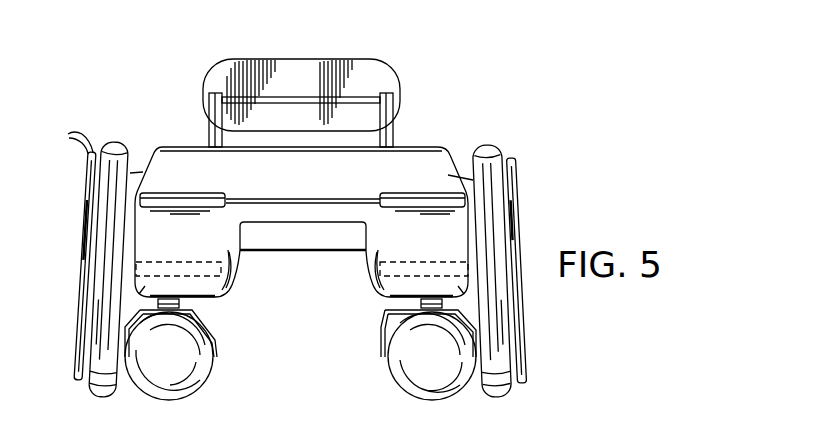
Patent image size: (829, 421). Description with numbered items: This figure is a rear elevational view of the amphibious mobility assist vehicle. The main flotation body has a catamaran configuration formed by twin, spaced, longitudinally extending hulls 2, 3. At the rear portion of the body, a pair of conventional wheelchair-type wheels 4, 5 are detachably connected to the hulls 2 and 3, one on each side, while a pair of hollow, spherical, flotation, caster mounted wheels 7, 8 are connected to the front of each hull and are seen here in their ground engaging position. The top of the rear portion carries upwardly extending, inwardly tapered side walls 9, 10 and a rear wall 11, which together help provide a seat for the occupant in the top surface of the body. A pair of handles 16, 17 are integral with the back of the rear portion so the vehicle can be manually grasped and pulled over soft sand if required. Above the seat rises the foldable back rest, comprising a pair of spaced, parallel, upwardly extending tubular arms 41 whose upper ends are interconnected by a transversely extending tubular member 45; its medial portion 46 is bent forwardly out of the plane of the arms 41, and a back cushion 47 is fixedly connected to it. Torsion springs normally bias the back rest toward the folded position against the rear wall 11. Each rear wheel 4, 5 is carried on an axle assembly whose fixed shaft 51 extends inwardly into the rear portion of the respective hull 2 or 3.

The hull 2 is at (227, 250).
The hull 3 is at (368, 252).
The wheelchair-type wheel 4 is at (71, 251).
The wheelchair-type wheel 5 is at (511, 158).
The spherical flotation caster mounted wheel 7 is at (196, 366).
The spherical flotation caster mounted wheel 8 is at (400, 368).
The side wall 9 is at (157, 157).
The side wall 10 is at (448, 152).
The rear wall 11 is at (303, 177).
The handle 16 is at (178, 193).
The handle 17 is at (406, 193).
The tubular arm 41 is at (210, 121).
The transversely extending tubular member 45 is at (248, 60).
The medial portion 46 is at (297, 88).
The back cushion 47 is at (378, 74).
The fixed shaft 51 is at (197, 262).